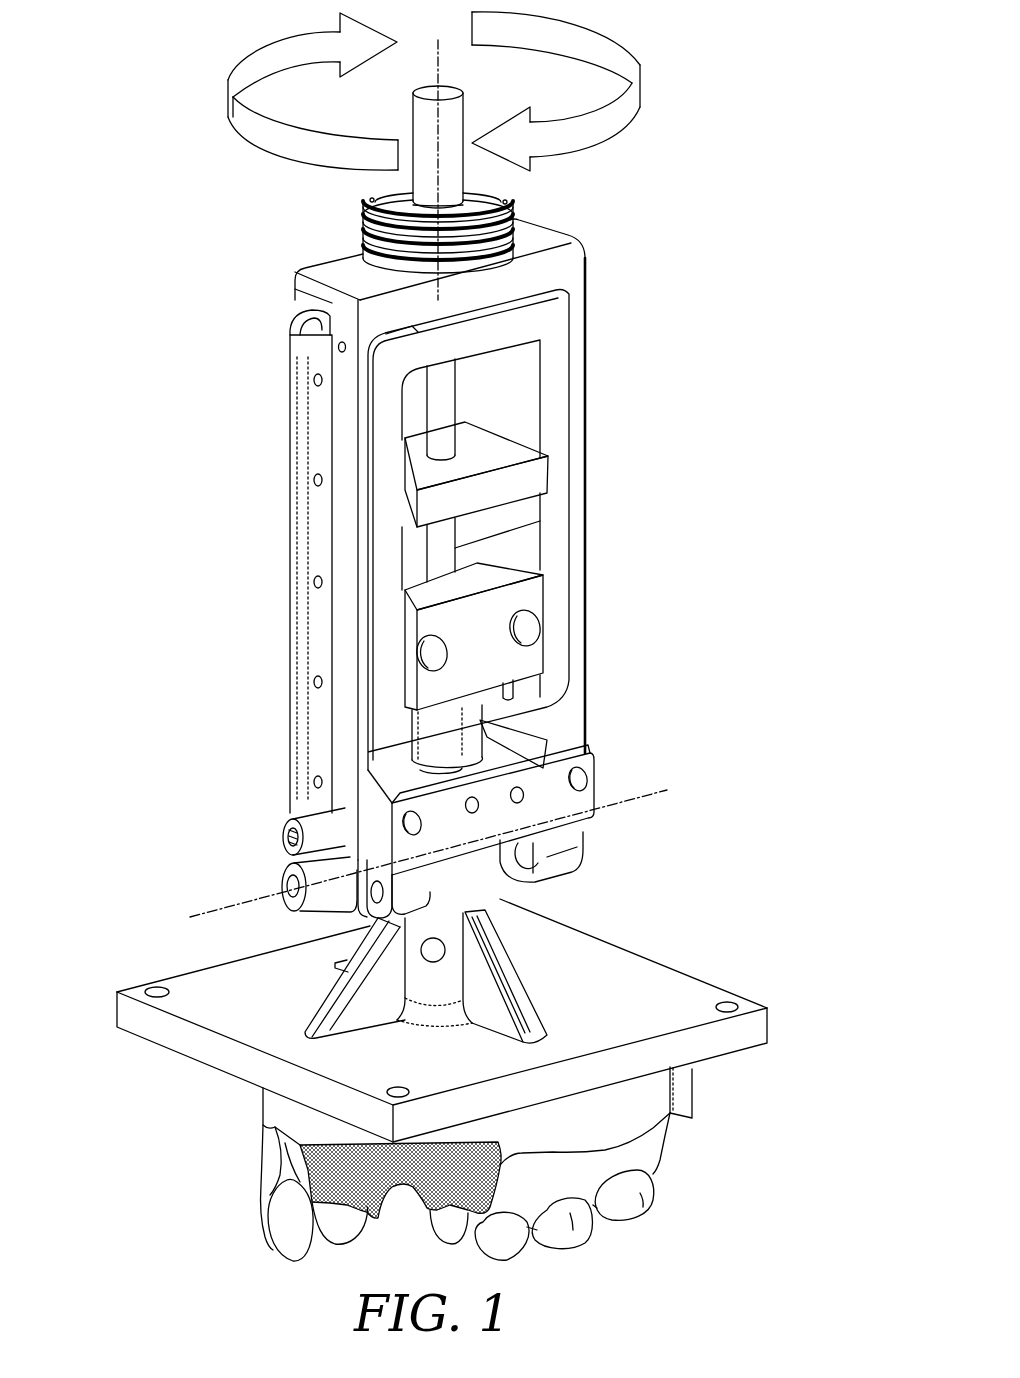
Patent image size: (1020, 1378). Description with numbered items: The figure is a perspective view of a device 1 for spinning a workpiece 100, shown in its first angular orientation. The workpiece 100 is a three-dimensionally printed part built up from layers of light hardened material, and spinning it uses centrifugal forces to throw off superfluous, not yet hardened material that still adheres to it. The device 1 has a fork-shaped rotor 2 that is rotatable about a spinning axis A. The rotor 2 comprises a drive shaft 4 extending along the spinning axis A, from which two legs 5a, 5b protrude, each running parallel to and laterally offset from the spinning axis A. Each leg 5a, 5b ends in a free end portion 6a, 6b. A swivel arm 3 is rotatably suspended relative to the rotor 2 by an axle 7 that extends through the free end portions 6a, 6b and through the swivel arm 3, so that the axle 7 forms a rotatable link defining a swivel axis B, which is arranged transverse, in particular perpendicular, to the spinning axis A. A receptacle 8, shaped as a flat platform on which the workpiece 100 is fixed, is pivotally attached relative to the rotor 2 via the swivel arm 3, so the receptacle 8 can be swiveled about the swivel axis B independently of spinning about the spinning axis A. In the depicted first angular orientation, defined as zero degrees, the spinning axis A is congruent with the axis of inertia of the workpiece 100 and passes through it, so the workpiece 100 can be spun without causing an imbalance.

The device 1 is at (710, 188).
The rotor 2 is at (560, 262).
The swivel arm 3 is at (555, 513).
The drive shaft 4 is at (453, 112).
The leg 5a is at (343, 437).
The leg 5b is at (587, 578).
The free end portion 6a is at (280, 917).
The free end portion 6b is at (613, 778).
The axle 7 is at (290, 884).
The receptacle 8 is at (750, 1030).
The workpiece 100 is at (638, 1148).
The spinning axis A is at (413, 127).
The swivel axis B is at (222, 908).